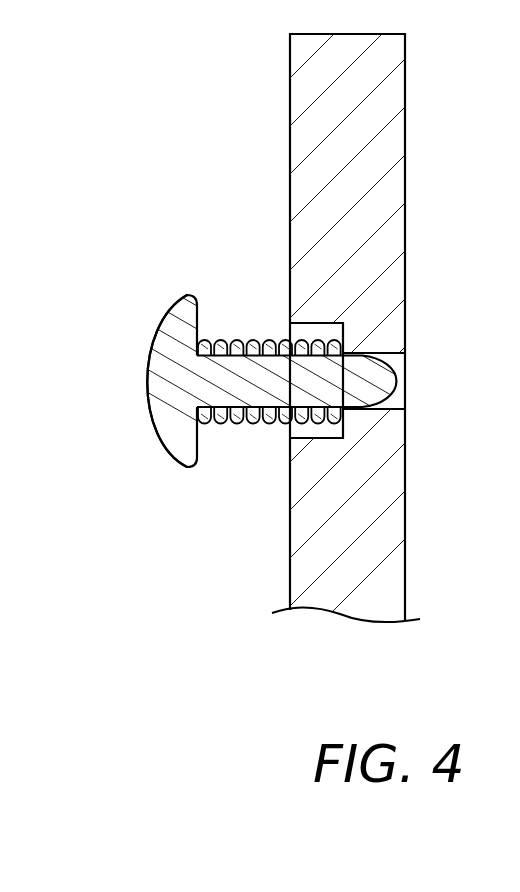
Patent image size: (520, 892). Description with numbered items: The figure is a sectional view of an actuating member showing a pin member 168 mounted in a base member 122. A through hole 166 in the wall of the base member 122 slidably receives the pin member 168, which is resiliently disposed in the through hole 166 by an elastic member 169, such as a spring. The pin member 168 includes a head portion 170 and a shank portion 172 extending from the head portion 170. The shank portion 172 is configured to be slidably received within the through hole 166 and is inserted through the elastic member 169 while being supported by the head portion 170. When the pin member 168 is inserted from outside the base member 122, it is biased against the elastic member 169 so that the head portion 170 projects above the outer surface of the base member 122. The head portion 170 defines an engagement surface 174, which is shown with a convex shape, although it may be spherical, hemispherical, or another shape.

The base member 122 is at (405, 88).
The through hole 166 is at (404, 407).
The pin member 168 is at (273, 328).
The elastic member 169 is at (252, 343).
The head portion 170 is at (166, 322).
The shank portion 172 is at (405, 362).
The engagement surface 174 is at (147, 381).